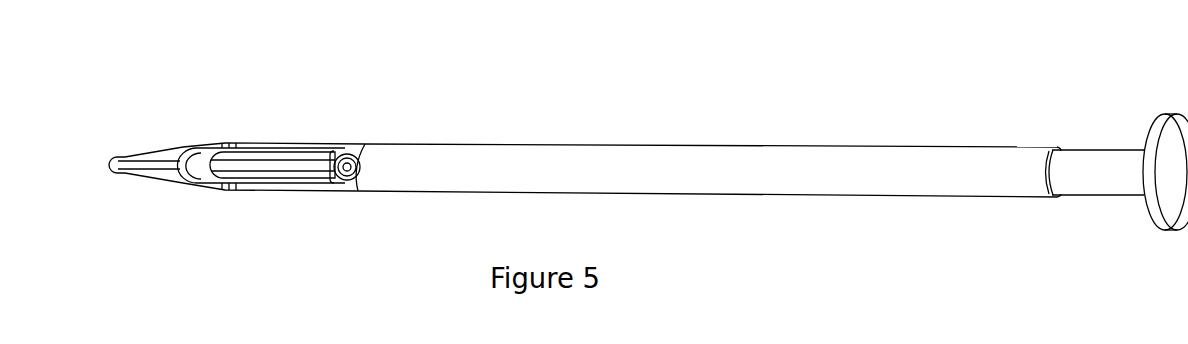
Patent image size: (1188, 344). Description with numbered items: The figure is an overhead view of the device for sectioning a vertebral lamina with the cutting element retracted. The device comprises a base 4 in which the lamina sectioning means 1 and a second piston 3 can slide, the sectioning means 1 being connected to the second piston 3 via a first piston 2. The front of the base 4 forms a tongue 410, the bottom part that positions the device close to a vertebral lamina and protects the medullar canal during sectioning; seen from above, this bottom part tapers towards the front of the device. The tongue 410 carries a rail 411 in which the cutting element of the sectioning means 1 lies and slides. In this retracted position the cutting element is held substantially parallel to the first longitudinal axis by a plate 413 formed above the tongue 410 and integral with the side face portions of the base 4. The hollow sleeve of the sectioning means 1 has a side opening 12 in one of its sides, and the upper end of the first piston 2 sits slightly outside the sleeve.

The sectioning means 1 is at (338, 185).
The first piston 2 is at (363, 143).
The second piston 3 is at (1095, 170).
The base 4 is at (335, 105).
The side opening 12 is at (249, 165).
The tongue 410 is at (168, 172).
The rail 411 is at (138, 156).
The plate 413 is at (197, 160).